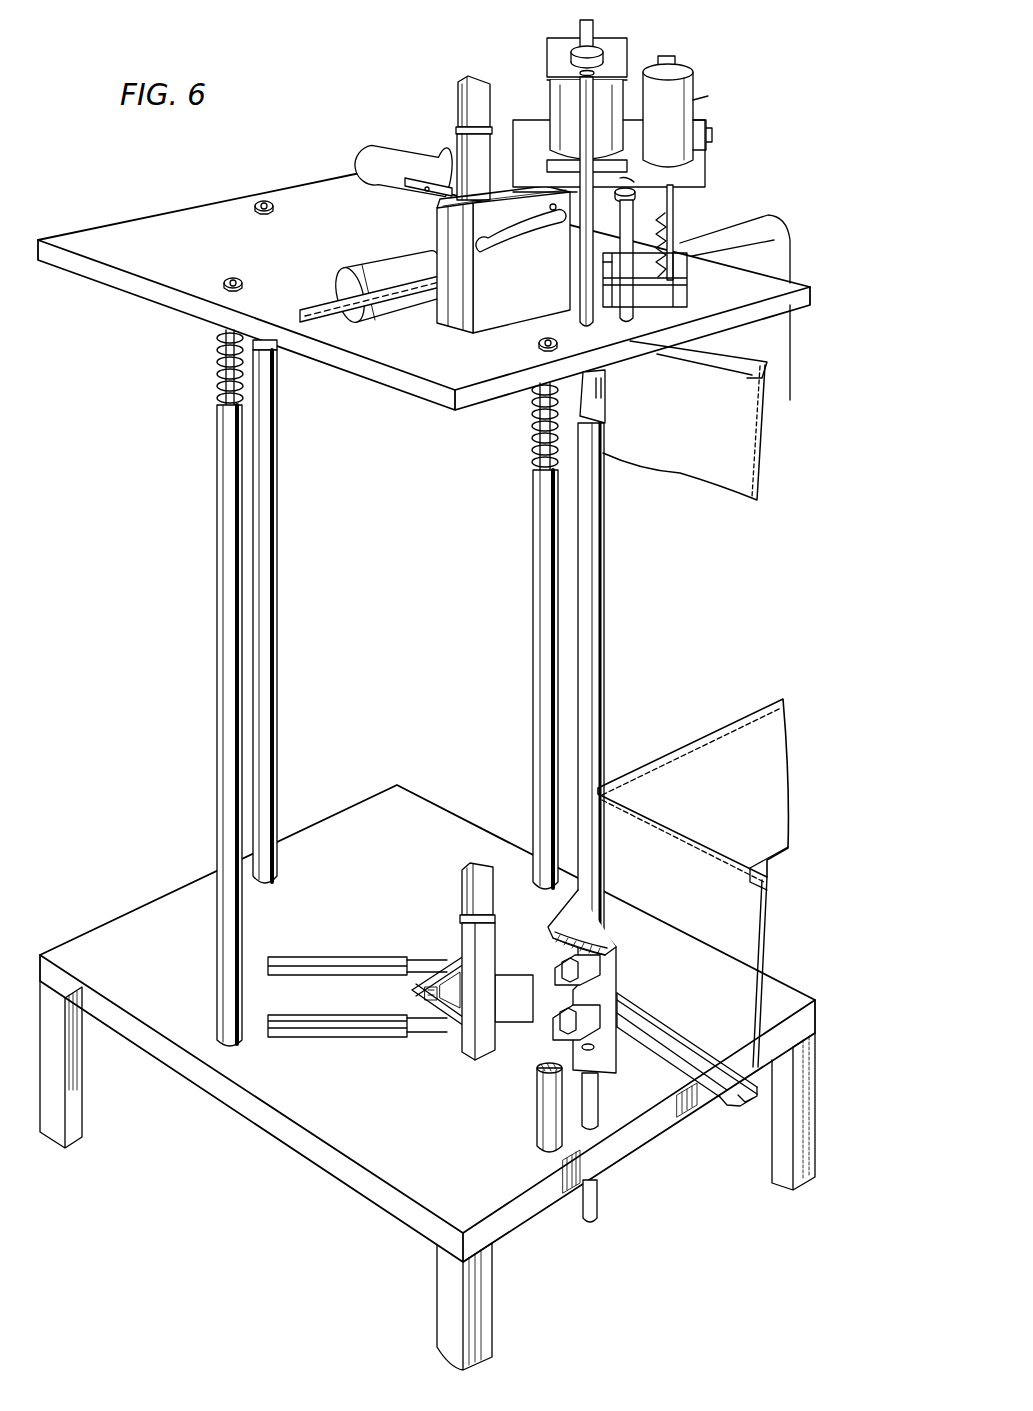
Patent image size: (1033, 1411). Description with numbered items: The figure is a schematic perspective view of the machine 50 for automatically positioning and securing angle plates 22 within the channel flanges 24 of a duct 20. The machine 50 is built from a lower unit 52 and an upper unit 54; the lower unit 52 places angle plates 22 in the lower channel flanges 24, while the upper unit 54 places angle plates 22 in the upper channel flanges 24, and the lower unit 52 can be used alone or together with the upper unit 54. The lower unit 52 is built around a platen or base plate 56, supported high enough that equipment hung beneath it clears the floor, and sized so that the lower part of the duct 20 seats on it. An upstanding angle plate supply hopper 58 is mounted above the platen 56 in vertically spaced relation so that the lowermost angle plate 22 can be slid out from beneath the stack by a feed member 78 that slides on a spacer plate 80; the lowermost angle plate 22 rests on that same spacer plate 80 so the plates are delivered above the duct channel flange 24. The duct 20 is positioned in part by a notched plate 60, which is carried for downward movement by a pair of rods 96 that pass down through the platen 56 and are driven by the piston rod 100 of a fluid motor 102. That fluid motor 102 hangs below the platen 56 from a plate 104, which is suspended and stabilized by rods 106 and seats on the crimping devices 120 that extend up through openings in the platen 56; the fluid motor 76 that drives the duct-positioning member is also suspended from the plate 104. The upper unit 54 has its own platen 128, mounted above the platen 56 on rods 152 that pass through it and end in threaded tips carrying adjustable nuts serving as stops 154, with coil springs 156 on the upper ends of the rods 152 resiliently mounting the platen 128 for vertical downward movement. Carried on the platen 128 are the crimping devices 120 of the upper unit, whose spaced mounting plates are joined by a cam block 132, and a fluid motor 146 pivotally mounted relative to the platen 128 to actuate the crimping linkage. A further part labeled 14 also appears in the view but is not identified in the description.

The drive rod assembly 14 is at (295, 303).
The duct 20 is at (790, 751).
The angle plates 22 is at (441, 956).
The channel flanges 24 is at (779, 247).
The machine 50 is at (618, 652).
The lower unit 52 is at (476, 818).
The upper unit 54 is at (407, 399).
The platen 56 is at (368, 812).
The angle plate supply hopper 58 is at (457, 95).
The notched plate 60 is at (606, 426).
The fluid motor 76 is at (700, 100).
The feed member 78 is at (365, 1025).
The spacer plate 80 is at (348, 960).
The rods 96 is at (600, 313).
The piston rod 100 is at (563, 52).
The fluid motor 102 is at (620, 47).
The plate 104 is at (708, 162).
The rods 106 is at (640, 217).
The crimping devices 120 is at (558, 965).
The platen 128 is at (160, 299).
The cam block 132 is at (560, 294).
The fluid motor 146 is at (381, 151).
The rods 152 is at (252, 706).
The stops 154 is at (270, 198).
The coil springs 156 is at (215, 396).